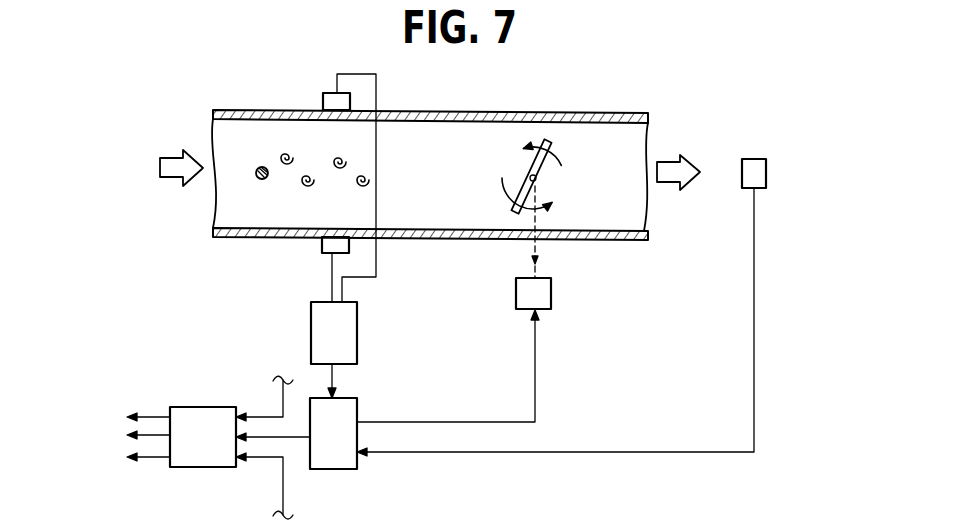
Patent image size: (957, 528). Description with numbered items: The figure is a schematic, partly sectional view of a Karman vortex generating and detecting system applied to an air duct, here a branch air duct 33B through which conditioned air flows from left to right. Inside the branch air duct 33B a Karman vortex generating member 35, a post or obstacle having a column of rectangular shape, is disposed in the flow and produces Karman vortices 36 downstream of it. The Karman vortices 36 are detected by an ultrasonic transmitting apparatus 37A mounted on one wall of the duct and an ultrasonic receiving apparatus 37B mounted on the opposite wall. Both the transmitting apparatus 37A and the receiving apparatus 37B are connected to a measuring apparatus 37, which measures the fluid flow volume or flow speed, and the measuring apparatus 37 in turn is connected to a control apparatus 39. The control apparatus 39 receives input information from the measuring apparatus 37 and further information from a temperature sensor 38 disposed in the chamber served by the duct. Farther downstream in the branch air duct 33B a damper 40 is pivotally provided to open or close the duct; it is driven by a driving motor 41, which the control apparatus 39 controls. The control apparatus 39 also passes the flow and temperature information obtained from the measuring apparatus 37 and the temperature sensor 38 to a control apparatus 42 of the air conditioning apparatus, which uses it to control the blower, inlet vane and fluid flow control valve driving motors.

The branch air duct 33B is at (467, 112).
The Karman vortex generating member 35 is at (261, 167).
The Karman vortices 36 is at (287, 152).
The ultrasonic transmitting apparatus 37A is at (350, 102).
The ultrasonic receiving apparatus 37B is at (322, 248).
The measuring apparatus 37 is at (355, 338).
The temperature sensor 38 is at (758, 160).
The control apparatus 39 is at (355, 465).
The damper 40 is at (548, 141).
The driving motor 41 is at (552, 291).
The control apparatus of the air conditioning apparatus 42 is at (207, 467).